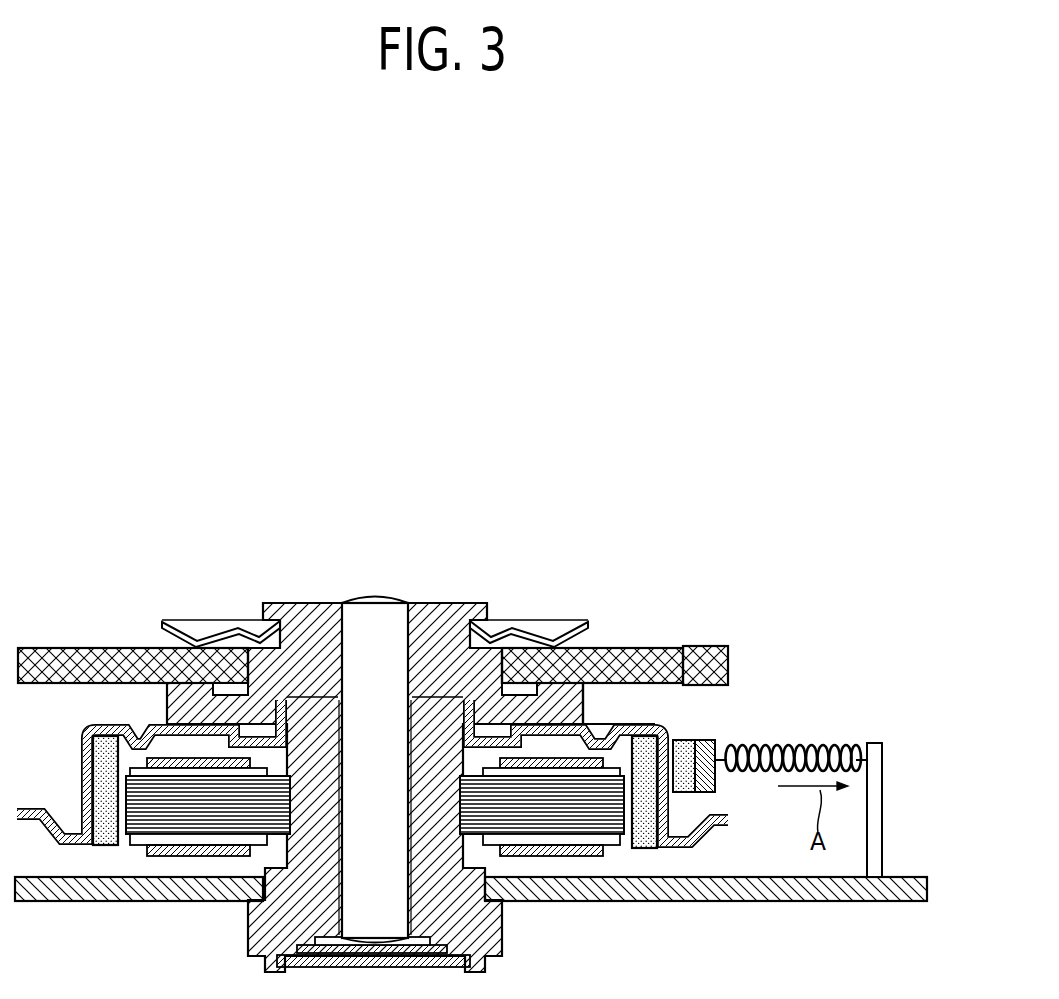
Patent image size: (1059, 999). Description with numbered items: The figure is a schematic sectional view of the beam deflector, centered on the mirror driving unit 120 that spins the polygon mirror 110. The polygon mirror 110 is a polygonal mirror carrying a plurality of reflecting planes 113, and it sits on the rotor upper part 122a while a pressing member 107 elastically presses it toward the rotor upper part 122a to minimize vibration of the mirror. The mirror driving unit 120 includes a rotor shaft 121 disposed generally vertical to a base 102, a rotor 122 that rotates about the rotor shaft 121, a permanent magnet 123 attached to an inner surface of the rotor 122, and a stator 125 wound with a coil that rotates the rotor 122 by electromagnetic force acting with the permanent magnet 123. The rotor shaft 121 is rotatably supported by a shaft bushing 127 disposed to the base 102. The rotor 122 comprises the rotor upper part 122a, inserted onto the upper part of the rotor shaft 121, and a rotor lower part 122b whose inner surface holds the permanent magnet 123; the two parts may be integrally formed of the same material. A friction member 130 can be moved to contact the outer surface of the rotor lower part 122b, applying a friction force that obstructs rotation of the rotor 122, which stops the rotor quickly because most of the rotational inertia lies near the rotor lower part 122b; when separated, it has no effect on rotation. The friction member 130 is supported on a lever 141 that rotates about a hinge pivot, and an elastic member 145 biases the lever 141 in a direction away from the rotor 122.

The base 102 is at (875, 901).
The pressing member 107 is at (570, 620).
The polygon mirror 110 is at (647, 660).
The reflecting planes 113 is at (730, 667).
The mirror driving unit 120 is at (670, 855).
The rotor shaft 121 is at (375, 617).
The rotor 122 is at (810, 690).
The rotor upper part 122a is at (572, 700).
The rotor lower part 122b is at (643, 730).
The permanent magnet 123 is at (637, 827).
The stator 125 is at (550, 820).
The shaft bushing 127 is at (262, 933).
The friction member 130 is at (685, 792).
The lever 141 is at (703, 792).
The elastic member 145 is at (750, 772).